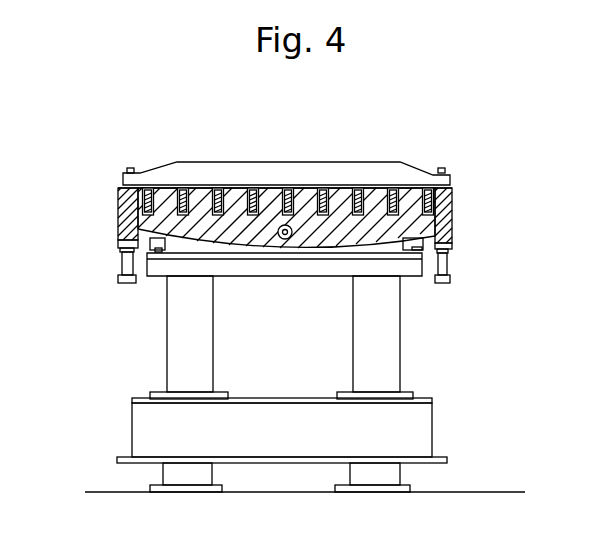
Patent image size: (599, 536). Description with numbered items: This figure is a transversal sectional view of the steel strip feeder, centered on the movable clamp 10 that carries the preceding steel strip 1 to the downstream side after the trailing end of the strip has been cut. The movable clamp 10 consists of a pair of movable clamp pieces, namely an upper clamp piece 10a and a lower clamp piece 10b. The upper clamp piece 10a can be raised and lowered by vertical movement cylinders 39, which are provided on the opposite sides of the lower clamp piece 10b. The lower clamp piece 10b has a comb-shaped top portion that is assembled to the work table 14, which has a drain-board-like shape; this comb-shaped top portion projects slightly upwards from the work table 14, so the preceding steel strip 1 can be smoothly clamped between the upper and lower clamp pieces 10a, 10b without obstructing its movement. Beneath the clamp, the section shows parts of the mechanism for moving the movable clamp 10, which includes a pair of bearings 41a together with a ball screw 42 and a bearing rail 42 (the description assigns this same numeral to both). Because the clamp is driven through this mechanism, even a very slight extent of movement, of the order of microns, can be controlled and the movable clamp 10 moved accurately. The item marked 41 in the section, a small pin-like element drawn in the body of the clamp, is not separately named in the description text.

The preceding steel strip 1 is at (252, 196).
The movable clamp 10 is at (289, 162).
The upper clamp piece 10a is at (343, 168).
The lower clamp piece 10b is at (248, 262).
The work table 14 is at (178, 198).
The vertical movement cylinders 39 is at (118, 195).
The pivot pin 41 is at (289, 240).
The bearings 41a is at (118, 240).
The ball screw 42 is at (121, 262).